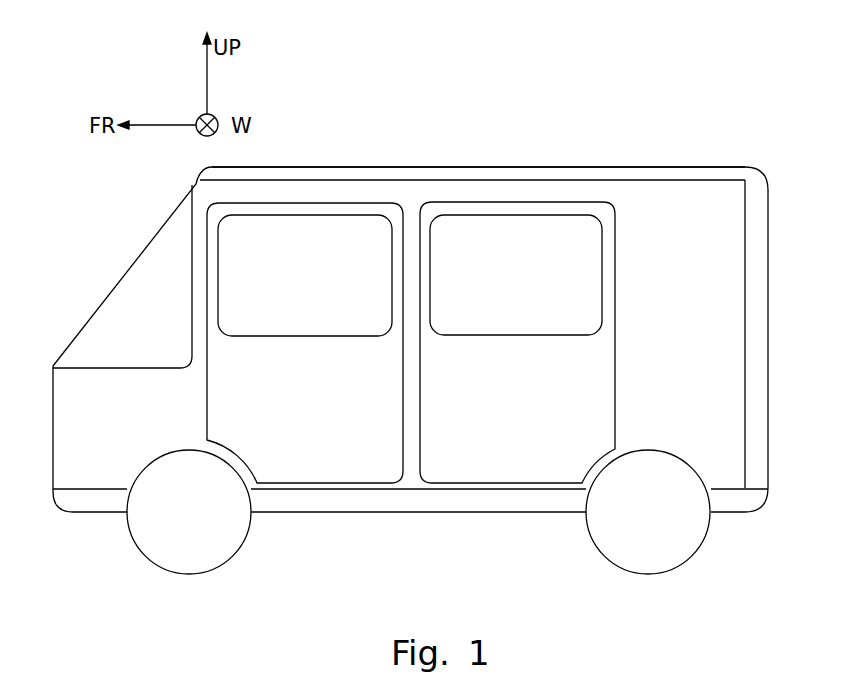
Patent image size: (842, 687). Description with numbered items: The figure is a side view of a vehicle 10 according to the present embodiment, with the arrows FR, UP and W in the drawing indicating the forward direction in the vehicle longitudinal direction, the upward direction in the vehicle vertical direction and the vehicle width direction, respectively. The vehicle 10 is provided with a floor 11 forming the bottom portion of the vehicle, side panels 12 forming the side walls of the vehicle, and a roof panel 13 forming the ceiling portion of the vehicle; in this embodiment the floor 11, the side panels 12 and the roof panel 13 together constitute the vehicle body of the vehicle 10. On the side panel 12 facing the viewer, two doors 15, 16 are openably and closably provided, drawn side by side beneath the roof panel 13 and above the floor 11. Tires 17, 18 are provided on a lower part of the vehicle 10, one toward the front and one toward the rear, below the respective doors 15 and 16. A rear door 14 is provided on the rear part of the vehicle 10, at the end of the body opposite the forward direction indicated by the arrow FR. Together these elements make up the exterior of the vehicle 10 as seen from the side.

The vehicle 10 is at (696, 141).
The floor 11 is at (505, 505).
The side panel 12 is at (712, 388).
The roof panel 13 is at (643, 171).
The rear door 14 is at (757, 212).
The door 15 is at (319, 473).
The door 16 is at (458, 473).
The tire 17 is at (185, 567).
The tire 18 is at (645, 565).